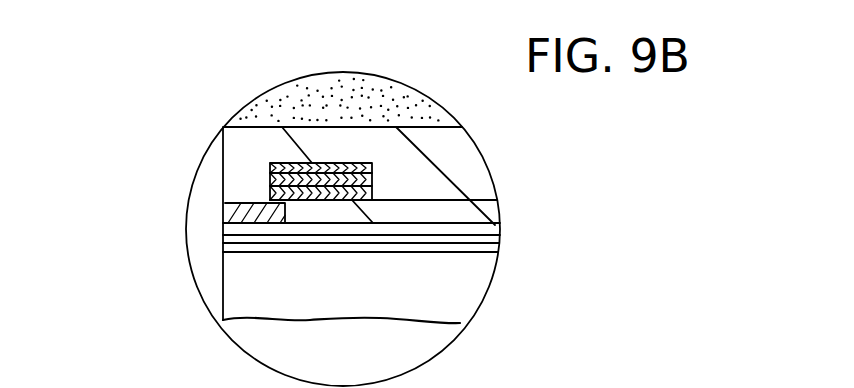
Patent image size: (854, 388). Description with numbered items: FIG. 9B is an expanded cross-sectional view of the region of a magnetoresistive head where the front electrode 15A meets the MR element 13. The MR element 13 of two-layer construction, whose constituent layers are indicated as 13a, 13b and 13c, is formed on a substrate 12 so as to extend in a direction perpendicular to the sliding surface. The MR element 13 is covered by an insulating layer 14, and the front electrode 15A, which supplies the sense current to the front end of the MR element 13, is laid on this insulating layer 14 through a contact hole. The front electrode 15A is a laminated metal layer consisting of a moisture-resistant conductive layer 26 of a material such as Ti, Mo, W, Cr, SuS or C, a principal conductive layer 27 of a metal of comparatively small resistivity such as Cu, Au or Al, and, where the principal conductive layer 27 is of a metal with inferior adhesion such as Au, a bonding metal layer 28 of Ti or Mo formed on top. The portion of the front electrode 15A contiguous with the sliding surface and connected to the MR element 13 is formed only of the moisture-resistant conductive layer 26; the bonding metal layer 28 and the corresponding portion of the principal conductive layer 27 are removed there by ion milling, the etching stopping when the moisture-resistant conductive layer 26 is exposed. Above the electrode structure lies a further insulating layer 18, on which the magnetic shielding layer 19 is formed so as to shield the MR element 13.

The substrate 12 is at (460, 282).
The MR element 13 is at (431, 229).
The active layer 13a is at (490, 236).
The upper cladding layer 13b is at (490, 224).
The lower cladding layer 13c is at (407, 261).
The insulating layer 14 is at (423, 213).
The front electrode 15A is at (210, 170).
The insulating layer 18 is at (434, 143).
The magnetic shielding layer 19 is at (373, 97).
The moisture-resistant conductive layer 26 is at (270, 199).
The principal conductive layer 27 is at (270, 176).
The bonding metal layer 28 is at (270, 165).